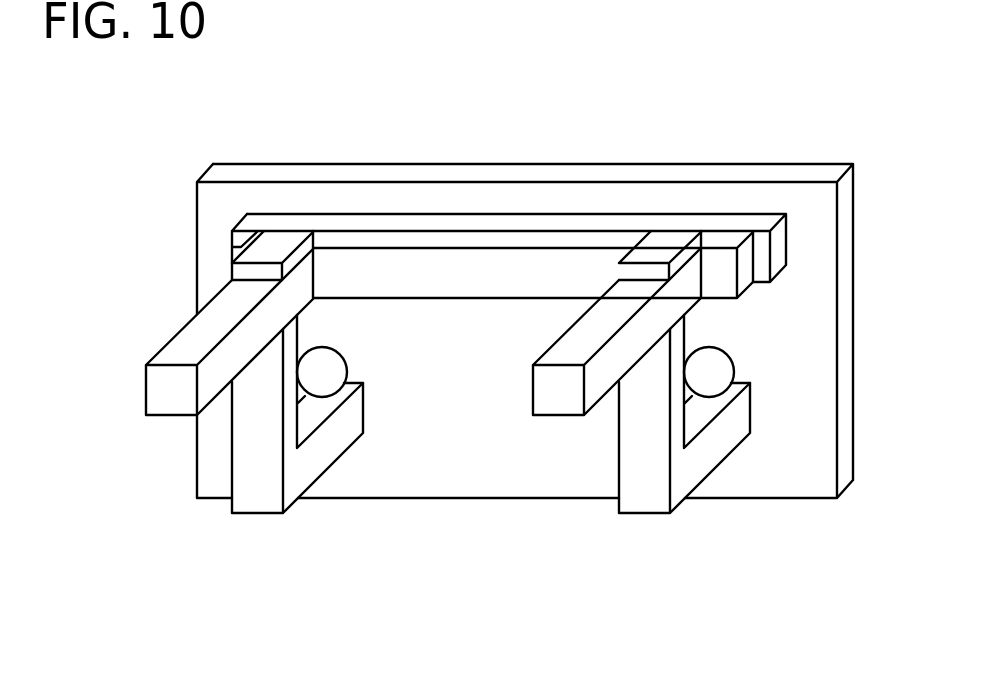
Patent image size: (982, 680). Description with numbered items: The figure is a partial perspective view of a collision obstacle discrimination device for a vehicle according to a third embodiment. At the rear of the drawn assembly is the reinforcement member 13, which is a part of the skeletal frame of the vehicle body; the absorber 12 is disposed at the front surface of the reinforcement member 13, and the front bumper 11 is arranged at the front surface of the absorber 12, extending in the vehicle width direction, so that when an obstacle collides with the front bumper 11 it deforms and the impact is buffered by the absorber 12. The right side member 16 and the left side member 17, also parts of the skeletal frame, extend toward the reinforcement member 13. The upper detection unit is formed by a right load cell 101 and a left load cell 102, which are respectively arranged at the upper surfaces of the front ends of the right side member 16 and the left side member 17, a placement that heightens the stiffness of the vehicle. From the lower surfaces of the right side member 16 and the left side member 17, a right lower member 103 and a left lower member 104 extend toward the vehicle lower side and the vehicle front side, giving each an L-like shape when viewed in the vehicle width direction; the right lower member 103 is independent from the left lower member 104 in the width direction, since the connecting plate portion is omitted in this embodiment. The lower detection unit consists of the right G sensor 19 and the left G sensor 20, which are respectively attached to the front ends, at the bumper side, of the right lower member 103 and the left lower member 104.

The front bumper 11 is at (788, 493).
The absorber 12 is at (780, 245).
The reinforcement member 13 is at (440, 265).
The right load cell 101 is at (660, 248).
The left load cell 102 is at (272, 248).
The right side member 16 is at (547, 403).
The left side member 17 is at (157, 392).
The right lower member 103 is at (638, 500).
The left lower member 104 is at (250, 498).
The right G sensor 19 is at (713, 385).
The left G sensor 20 is at (325, 383).